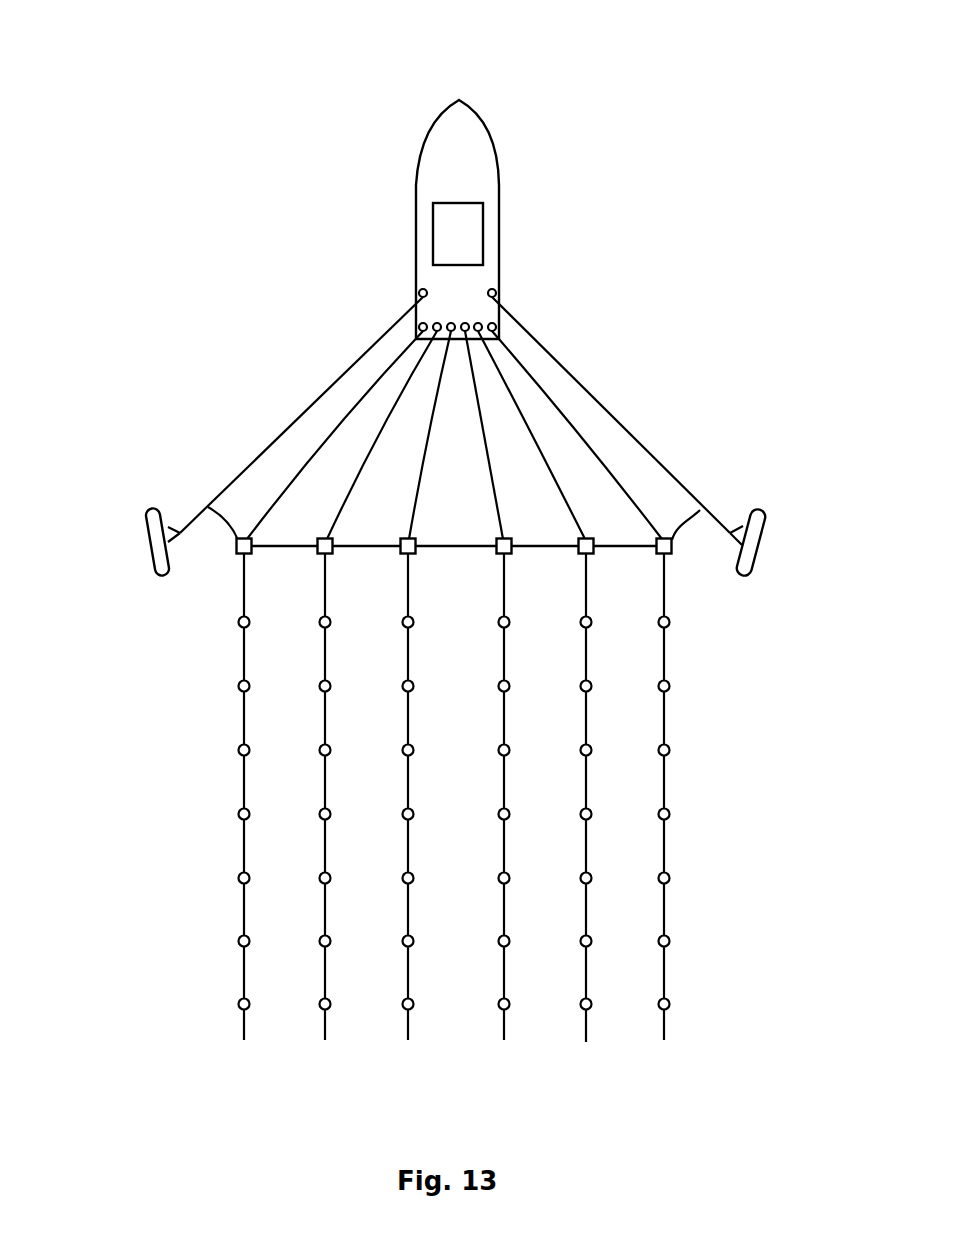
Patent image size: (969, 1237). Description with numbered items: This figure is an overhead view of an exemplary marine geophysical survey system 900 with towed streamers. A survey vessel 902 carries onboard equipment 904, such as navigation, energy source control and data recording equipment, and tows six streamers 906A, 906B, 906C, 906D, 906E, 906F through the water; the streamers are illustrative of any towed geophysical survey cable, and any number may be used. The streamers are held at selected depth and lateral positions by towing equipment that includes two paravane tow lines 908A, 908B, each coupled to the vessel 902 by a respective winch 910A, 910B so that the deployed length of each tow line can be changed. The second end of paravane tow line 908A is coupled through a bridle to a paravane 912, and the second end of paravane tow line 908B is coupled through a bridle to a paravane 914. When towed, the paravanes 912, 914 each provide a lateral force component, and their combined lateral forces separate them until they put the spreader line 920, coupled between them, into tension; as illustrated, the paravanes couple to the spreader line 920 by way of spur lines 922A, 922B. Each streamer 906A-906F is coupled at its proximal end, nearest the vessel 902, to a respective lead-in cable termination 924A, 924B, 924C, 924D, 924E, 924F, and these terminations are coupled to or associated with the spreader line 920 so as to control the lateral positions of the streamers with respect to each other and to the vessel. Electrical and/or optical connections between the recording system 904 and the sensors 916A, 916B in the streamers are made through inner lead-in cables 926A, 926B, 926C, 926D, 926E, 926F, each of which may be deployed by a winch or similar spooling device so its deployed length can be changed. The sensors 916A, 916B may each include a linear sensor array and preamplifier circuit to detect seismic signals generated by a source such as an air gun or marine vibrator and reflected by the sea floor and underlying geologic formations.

The marine geophysical survey system 900 is at (237, 84).
The survey vessel 902 is at (422, 162).
The onboard equipment 904 is at (483, 218).
The streamer 906A is at (190, 829).
The streamer 906B is at (325, 1040).
The streamer 906C is at (408, 1040).
The streamer 906D is at (504, 1040).
The streamer 906E is at (586, 1040).
The streamer 906F is at (665, 1033).
The paravane tow line 908A is at (400, 322).
The paravane tow line 908B is at (597, 407).
The winch 910A is at (418, 290).
The winch 910B is at (496, 280).
The paravane 912 is at (160, 578).
The paravane 914 is at (762, 508).
The sensor 916A is at (240, 628).
The sensor 916B is at (240, 690).
The spreader line 920 is at (430, 545).
The spur line 922A is at (227, 535).
The spur line 922B is at (690, 548).
The lead-in cable termination 924A is at (247, 554).
The lead-in cable termination 924B is at (328, 554).
The lead-in cable termination 924C is at (410, 554).
The lead-in cable termination 924D is at (506, 554).
The lead-in cable termination 924E is at (588, 554).
The lead-in cable termination 924F is at (671, 553).
The inner lead-in cable 926A is at (388, 380).
The inner lead-in cable 926B is at (400, 423).
The inner lead-in cable 926C is at (423, 473).
The inner lead-in cable 926D is at (473, 383).
The inner lead-in cable 926E is at (507, 408).
The inner lead-in cable 926F is at (587, 457).